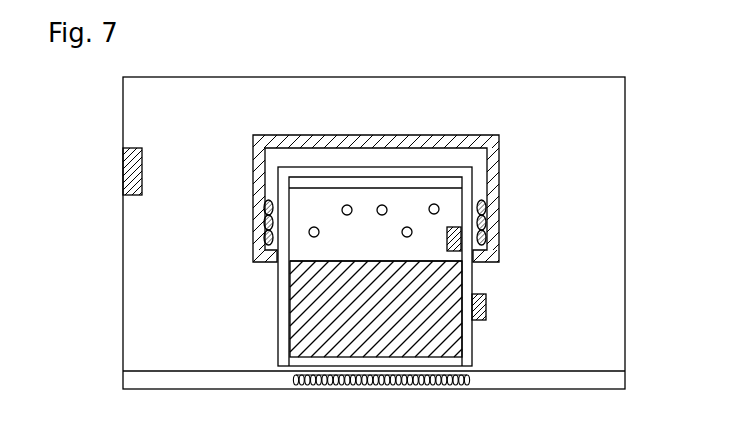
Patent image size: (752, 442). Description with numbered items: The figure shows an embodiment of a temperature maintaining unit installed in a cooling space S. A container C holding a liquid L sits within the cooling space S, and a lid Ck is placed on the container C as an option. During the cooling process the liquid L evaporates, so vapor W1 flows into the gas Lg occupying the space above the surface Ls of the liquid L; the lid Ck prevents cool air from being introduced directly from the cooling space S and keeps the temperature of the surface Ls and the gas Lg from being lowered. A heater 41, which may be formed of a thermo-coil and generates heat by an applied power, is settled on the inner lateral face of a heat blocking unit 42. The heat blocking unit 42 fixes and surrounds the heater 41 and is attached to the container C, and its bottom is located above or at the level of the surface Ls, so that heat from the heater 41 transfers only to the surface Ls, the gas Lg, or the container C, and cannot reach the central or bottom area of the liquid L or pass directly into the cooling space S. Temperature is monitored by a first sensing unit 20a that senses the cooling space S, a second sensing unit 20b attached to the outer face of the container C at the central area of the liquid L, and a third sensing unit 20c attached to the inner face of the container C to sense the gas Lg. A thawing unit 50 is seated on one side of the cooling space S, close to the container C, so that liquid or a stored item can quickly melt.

The cooling space S is at (374, 233).
The first sensing unit 20a is at (123, 168).
The second sensing unit 20b is at (486, 306).
The third sensing unit 20c is at (461, 240).
The heater 41 is at (483, 197).
The heat blocking unit 42 is at (499, 140).
The thawing unit 50 is at (470, 383).
The liquid L is at (338, 330).
The surface of the liquid Ls is at (308, 261).
The gas Lg is at (332, 224).
The vapor W1 is at (407, 227).
The lid Ck is at (460, 163).
The container C is at (472, 348).